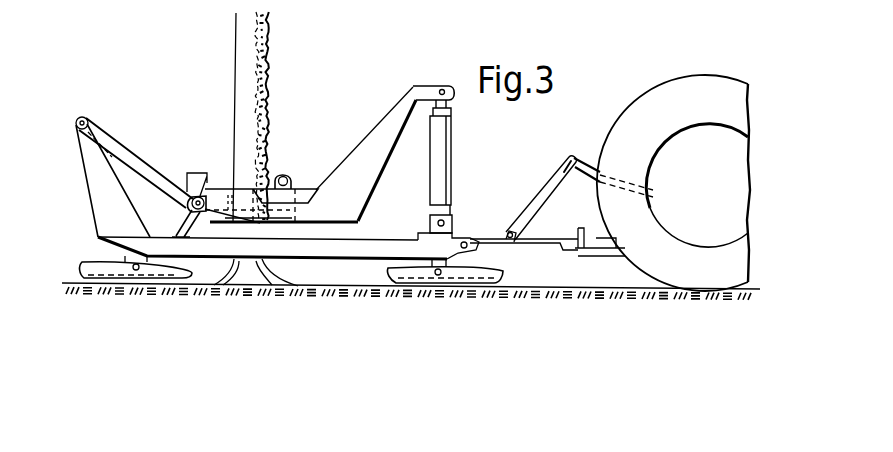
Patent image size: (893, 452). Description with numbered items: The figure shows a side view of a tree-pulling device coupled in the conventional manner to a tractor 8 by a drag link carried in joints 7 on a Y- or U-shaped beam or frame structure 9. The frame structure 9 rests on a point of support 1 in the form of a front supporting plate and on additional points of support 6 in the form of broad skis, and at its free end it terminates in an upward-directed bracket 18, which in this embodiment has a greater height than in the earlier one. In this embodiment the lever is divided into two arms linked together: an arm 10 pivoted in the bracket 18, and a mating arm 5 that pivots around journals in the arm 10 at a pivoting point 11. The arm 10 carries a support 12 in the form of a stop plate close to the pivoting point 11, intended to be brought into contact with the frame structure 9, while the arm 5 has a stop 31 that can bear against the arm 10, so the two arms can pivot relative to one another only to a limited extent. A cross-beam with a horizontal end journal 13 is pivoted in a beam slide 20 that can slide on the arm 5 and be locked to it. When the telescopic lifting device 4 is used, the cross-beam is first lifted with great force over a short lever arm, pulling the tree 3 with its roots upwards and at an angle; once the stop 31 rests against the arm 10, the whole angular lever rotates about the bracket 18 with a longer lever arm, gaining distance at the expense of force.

The point of support 1 is at (503, 281).
The tree 3 is at (264, 88).
The lifting device 4 is at (445, 156).
The arm 5 is at (392, 122).
The points of support 6 is at (185, 280).
The joint 7 is at (468, 241).
The tractor 8 is at (736, 162).
The beam or frame structure 9 is at (392, 220).
The arm 10 is at (116, 152).
The pivoting point 11 is at (199, 196).
The support 12 is at (206, 212).
The end journal 13 is at (286, 172).
The bracket 18 is at (98, 205).
The beam slide 20 is at (322, 170).
The stop 31 is at (190, 172).